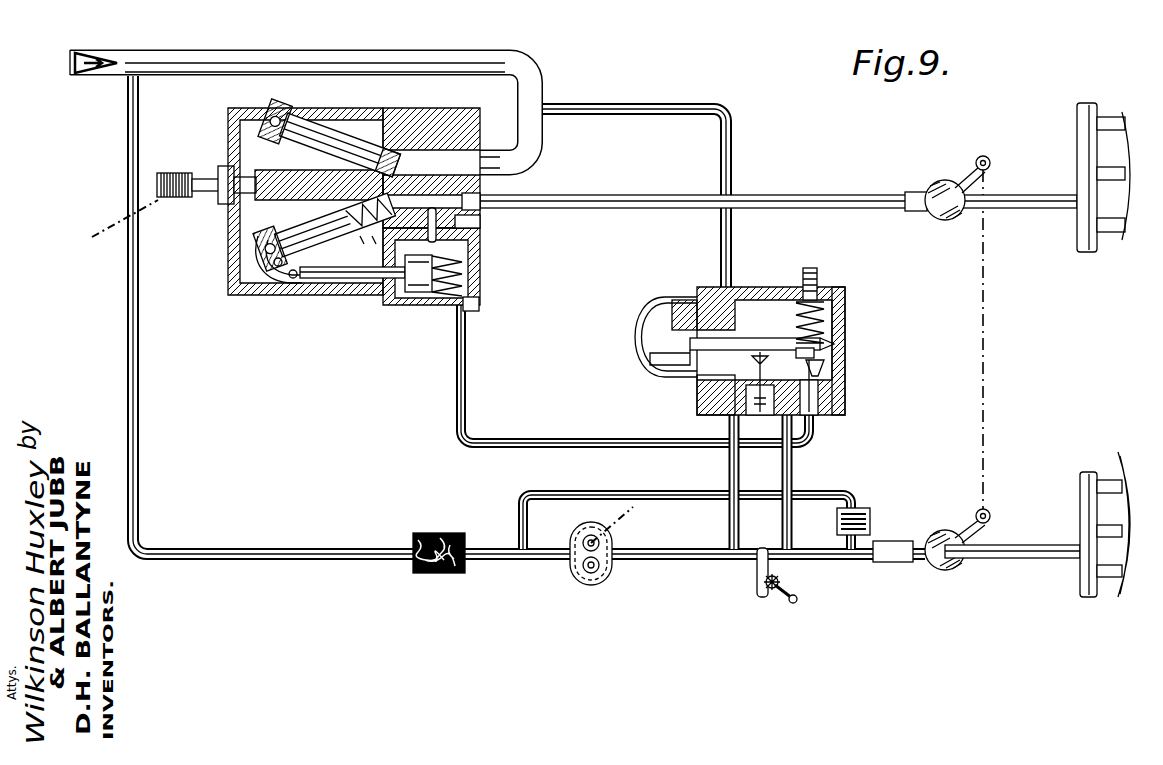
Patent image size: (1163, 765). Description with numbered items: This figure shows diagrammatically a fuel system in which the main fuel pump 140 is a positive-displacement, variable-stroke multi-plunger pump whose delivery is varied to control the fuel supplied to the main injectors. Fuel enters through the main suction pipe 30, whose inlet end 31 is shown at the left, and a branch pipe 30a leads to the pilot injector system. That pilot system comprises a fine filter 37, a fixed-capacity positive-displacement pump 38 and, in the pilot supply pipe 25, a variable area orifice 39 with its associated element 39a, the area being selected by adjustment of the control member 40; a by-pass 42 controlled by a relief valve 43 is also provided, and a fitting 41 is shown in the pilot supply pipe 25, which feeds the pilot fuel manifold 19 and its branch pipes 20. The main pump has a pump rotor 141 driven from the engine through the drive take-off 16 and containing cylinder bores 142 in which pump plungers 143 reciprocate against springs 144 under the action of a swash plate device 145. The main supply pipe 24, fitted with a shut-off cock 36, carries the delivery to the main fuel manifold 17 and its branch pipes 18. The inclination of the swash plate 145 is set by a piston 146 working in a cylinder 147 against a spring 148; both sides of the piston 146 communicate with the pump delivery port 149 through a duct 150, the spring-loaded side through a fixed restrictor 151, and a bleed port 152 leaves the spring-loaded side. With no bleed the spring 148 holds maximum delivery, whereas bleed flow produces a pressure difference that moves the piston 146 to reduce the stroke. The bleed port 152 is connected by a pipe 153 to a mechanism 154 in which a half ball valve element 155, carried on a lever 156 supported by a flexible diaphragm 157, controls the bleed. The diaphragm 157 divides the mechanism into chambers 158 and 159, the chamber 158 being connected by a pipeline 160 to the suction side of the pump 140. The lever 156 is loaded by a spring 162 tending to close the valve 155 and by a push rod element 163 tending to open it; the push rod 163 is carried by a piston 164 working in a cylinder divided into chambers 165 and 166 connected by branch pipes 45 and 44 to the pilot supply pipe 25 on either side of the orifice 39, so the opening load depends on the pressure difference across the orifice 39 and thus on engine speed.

The drive take-off 16 is at (371, 354).
The main fuel manifold 17 is at (1076, 128).
The branch pipes 18 is at (1106, 180).
The pilot fuel manifold 19 is at (1080, 479).
The branch pipes 20 is at (1113, 476).
The supply pipe 24 is at (1056, 209).
The supply pipe 25 is at (1056, 546).
The main suction pipe 30 is at (214, 77).
The branch pipe 30a is at (141, 144).
The intake nozzle 31 is at (106, 78).
The shut-off cock 36 is at (941, 182).
The fine filter 37 is at (446, 533).
The fixed-capacity positive-displacement pump 38 is at (569, 572).
The variable area orifice 39 is at (761, 547).
The valve gear 39a is at (756, 586).
The control member 40 is at (788, 595).
The ball joint 41 is at (941, 533).
The by-pass 42 is at (526, 492).
The relief valve 43 is at (866, 508).
The branch pipe 44 is at (728, 468).
The branch pipe 45 is at (793, 468).
The main fuel pump 140 is at (320, 292).
The pump rotor 141 is at (350, 240).
The cylinder bores 142 is at (374, 252).
The pump plungers 143 is at (342, 134).
The springs 144 is at (402, 130).
The swash plate device 145 is at (284, 120).
The piston 146 is at (419, 293).
The cylinder 147 is at (402, 306).
The spring 148 is at (463, 272).
The pump delivery port 149 is at (472, 206).
The duct 150 is at (472, 219).
The fixed restrictor 151 is at (468, 243).
The bleed port 152 is at (473, 306).
The pipe 153 is at (471, 441).
The mechanism 154 is at (846, 330).
The half ball valve element 155 is at (816, 353).
The lever 156 is at (736, 345).
The flexible diaphragm 157 is at (700, 341).
The chamber 158 is at (772, 302).
The chamber 159 is at (661, 299).
The pipeline 160 is at (731, 121).
The spring 162 is at (826, 316).
The push rod element 163 is at (692, 383).
The piston 164 is at (813, 418).
The chamber 165 is at (822, 370).
The chamber 166 is at (746, 406).